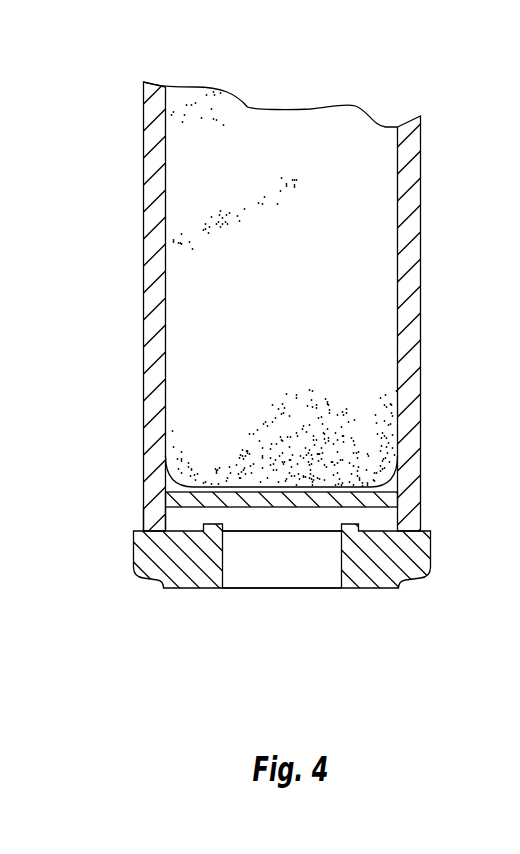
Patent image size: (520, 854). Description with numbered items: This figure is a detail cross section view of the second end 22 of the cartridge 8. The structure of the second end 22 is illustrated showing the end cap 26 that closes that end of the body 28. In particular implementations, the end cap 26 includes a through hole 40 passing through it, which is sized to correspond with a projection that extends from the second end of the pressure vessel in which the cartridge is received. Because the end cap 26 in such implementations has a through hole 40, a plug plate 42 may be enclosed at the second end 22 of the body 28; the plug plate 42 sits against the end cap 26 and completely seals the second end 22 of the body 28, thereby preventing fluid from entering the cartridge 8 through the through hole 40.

The cartridge 8 is at (119, 139).
The body 28 is at (148, 235).
The plug plate 42 is at (382, 503).
The second end 22 is at (150, 512).
The end cap 26 is at (157, 557).
The through hole 40 is at (275, 565).